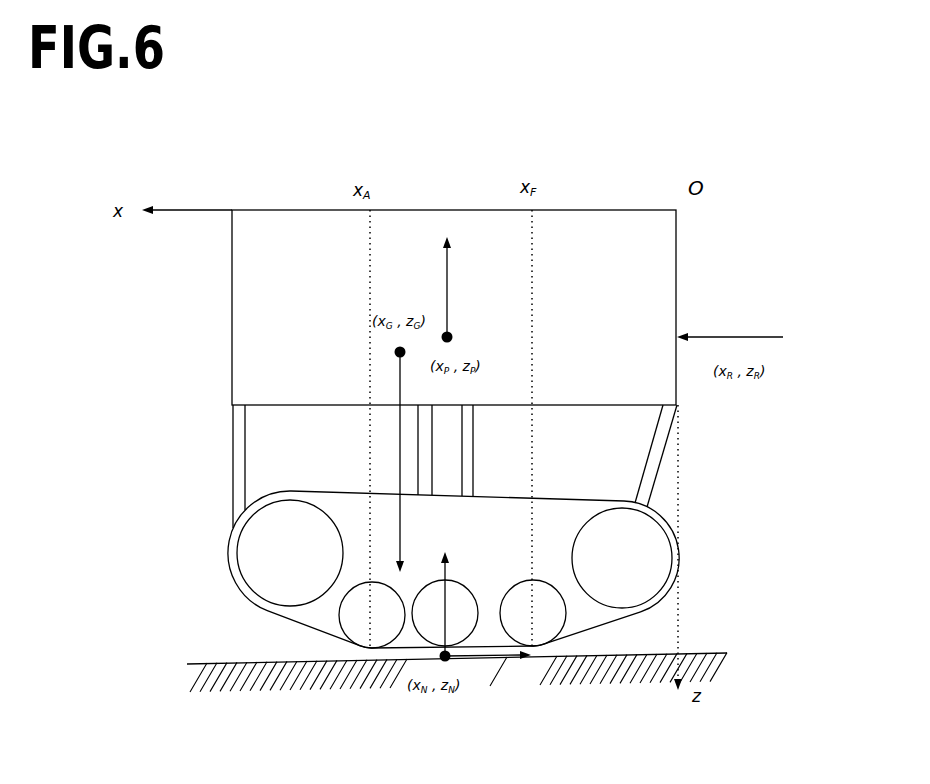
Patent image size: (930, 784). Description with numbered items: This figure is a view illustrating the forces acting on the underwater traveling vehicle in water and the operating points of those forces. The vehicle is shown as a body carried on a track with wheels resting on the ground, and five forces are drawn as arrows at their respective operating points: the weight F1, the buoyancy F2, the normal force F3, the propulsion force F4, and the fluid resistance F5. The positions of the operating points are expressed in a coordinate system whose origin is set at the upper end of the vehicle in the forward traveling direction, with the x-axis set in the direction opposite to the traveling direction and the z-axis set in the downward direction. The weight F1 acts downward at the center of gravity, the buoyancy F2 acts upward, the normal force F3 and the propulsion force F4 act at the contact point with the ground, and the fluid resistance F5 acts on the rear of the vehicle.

The weight F1 is at (390, 460).
The buoyancy F2 is at (468, 287).
The normal force F3 is at (448, 591).
The propulsion force F4 is at (489, 674).
The fluid resistance F5 is at (730, 326).